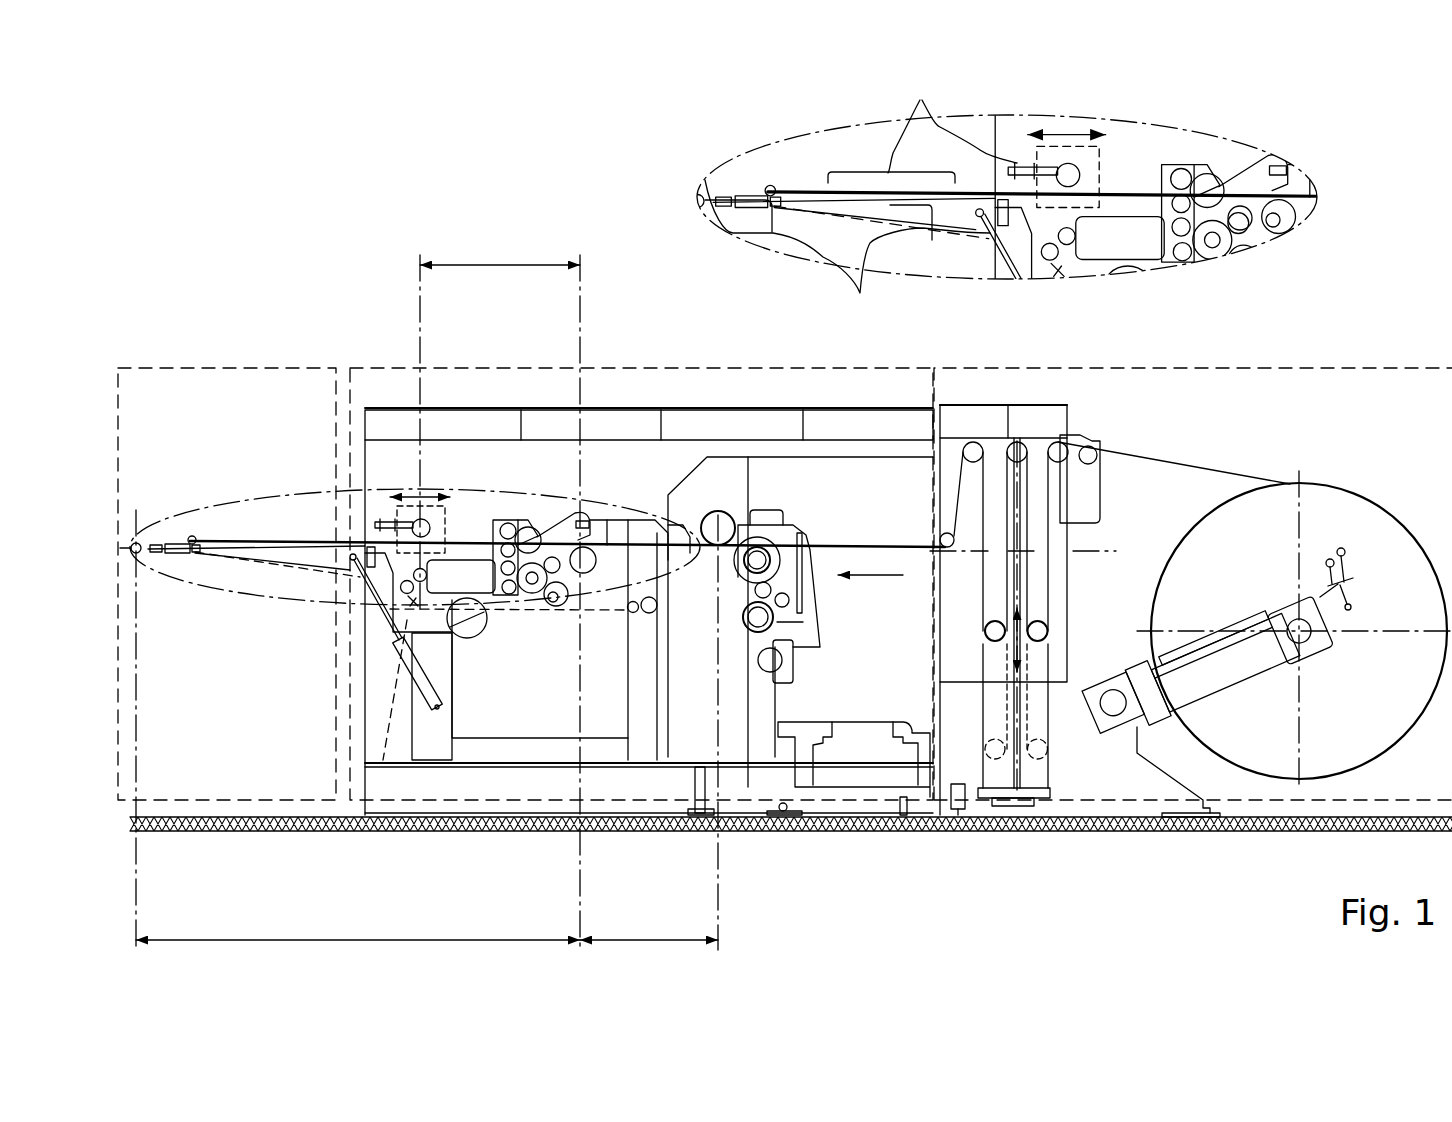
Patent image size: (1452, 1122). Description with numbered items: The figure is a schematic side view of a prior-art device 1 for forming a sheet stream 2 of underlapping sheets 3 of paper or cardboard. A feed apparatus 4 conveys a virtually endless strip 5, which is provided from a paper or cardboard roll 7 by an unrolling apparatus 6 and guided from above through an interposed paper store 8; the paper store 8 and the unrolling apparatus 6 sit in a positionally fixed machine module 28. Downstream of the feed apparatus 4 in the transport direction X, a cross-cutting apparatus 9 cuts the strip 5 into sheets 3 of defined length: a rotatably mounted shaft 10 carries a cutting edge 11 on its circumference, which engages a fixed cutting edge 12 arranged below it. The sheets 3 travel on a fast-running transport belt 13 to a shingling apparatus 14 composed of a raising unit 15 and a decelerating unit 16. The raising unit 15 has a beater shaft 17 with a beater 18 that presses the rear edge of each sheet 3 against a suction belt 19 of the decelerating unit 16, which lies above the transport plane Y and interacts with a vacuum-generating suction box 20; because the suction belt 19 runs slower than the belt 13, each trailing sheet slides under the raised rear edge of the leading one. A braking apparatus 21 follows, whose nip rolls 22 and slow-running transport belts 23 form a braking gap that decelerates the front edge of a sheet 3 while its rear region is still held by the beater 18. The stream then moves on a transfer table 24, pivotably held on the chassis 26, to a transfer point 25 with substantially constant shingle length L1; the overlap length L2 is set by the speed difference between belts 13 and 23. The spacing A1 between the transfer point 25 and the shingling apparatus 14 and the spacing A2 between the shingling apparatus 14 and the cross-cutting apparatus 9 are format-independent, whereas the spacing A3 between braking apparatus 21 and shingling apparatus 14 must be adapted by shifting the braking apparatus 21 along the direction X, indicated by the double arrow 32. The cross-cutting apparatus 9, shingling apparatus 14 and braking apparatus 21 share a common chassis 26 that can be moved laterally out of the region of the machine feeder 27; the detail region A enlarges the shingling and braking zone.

The device 1 is at (275, 170).
The sheet stream 2 is at (222, 520).
The sheets 3 is at (273, 540).
The feed apparatus 4 is at (795, 500).
The strip 5 is at (1183, 485).
The unrolling apparatus 6 is at (1273, 718).
The paper or cardboard roll 7 is at (1322, 503).
The paper store 8 is at (1018, 392).
The cross-cutting apparatus 9 is at (703, 500).
The shaft 10 is at (722, 522).
The cutting edge 11 is at (713, 535).
The fixed cutting edge 12 is at (748, 555).
The fast-running transport belt 13 is at (646, 600).
The shingling apparatus 14 is at (540, 507).
The raising unit 15 is at (591, 600).
The decelerating unit 16 is at (590, 495).
The beater shaft 17 is at (560, 597).
The beater 18 is at (530, 592).
The suction belt 19 is at (572, 510).
The suction box 20 is at (597, 528).
The braking apparatus 21 is at (431, 527).
The nip rolls 22 is at (441, 521).
The slow-running transport belts 23 is at (293, 573).
The transfer table 24 is at (330, 568).
The transfer point 25 is at (145, 543).
The chassis 26 is at (762, 367).
The machine feeder 27 is at (235, 367).
The machine module 28 is at (1100, 470).
The double arrow 32 is at (427, 505).
The detail region A is at (297, 489).
The spacing A1 is at (382, 937).
The spacing A2 is at (620, 937).
The spacing A3 is at (500, 263).
The transport direction X is at (903, 580).
The transport plane Y is at (135, 543).
The shingle length L1 is at (847, 250).
The overlap length L2 is at (952, 123).